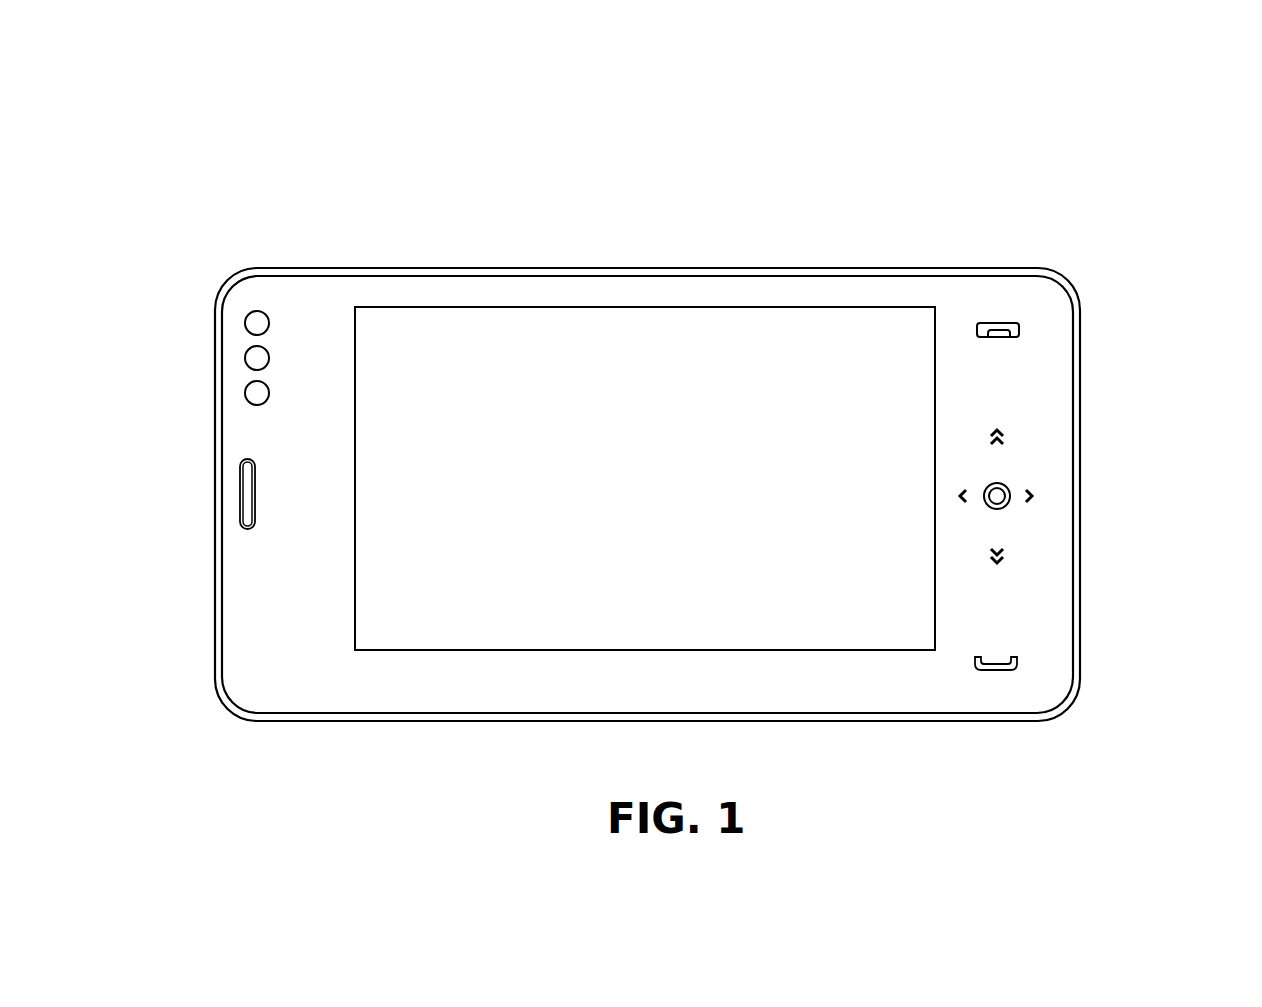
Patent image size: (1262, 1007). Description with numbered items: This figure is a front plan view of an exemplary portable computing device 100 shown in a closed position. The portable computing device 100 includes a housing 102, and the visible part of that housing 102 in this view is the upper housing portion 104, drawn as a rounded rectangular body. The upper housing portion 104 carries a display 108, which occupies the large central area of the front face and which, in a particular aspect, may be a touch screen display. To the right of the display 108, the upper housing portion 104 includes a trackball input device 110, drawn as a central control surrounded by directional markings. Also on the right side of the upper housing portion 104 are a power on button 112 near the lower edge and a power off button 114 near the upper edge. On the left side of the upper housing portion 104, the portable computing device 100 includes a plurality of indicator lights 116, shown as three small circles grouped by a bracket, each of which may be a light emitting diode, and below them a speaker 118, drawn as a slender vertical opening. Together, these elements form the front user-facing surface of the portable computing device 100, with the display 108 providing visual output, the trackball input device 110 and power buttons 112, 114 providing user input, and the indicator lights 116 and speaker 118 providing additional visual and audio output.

The portable computing device 100 is at (1134, 211).
The housing 102 is at (255, 268).
The upper housing portion 104 is at (635, 283).
The display 108 is at (648, 628).
The trackball input device 110 is at (1007, 503).
The power on button 112 is at (1017, 665).
The power off button 114 is at (1020, 325).
The indicator lights 116 is at (245, 303).
The speaker 118 is at (246, 495).